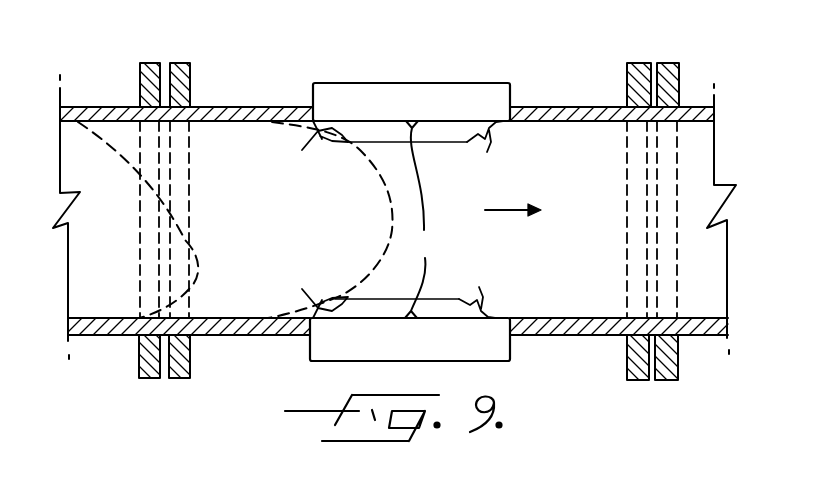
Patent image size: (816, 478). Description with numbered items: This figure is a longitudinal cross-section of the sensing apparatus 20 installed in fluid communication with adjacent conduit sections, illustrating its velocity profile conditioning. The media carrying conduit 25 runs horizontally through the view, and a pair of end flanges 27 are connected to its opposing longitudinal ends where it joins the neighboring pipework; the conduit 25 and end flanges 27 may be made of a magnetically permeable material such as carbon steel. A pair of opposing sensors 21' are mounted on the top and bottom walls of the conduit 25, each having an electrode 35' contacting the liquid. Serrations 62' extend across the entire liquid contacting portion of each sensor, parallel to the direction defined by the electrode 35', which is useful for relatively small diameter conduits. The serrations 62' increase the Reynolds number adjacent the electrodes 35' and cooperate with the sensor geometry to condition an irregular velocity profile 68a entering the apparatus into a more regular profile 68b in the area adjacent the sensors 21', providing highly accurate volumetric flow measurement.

The sensing apparatus 20 is at (569, 57).
The sensor 21' is at (410, 243).
The conduit 25 is at (574, 107).
The end flange 27 is at (176, 378).
The electrode 35' is at (429, 219).
The serrations 62' is at (391, 219).
The irregular velocity profile 68a is at (172, 224).
The more regular profile 68b is at (388, 237).